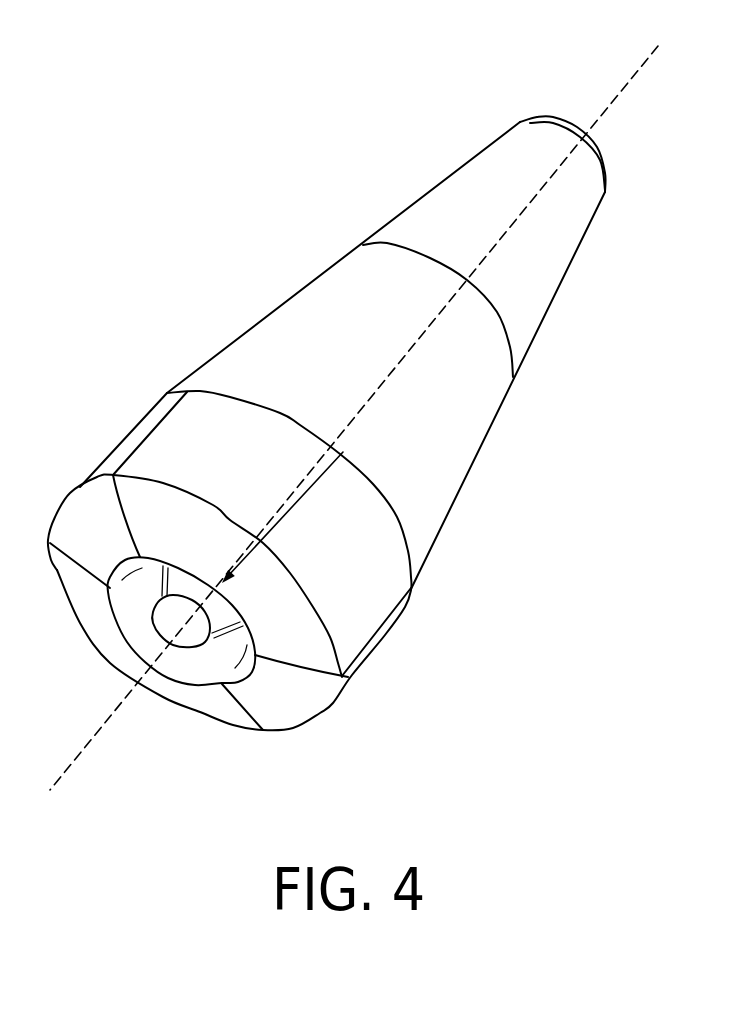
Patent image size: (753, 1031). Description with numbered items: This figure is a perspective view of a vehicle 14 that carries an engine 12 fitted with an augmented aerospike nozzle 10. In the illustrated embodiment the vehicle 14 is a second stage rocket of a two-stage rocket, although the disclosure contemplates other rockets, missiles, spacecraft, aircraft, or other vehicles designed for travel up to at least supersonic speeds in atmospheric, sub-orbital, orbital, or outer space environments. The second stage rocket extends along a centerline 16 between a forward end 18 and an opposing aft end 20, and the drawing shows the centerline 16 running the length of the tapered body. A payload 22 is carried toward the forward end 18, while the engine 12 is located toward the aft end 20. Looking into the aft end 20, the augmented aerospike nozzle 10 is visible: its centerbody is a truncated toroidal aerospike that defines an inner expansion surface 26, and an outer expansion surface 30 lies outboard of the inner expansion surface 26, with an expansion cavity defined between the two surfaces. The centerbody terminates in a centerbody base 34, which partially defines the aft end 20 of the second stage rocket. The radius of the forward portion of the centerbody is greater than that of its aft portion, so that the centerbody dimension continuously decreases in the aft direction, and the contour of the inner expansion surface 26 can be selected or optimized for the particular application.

The augmented aerospike nozzle 10 is at (134, 640).
The engine 12 is at (130, 759).
The vehicle 14 is at (196, 279).
The centerline 16 is at (640, 63).
The forward end 18 is at (605, 157).
The aft end 20 is at (320, 693).
The payload 22 is at (510, 345).
The inner expansion surface 26 is at (162, 583).
The outer expansion surface 30 is at (223, 663).
The centerbody base 34 is at (195, 635).